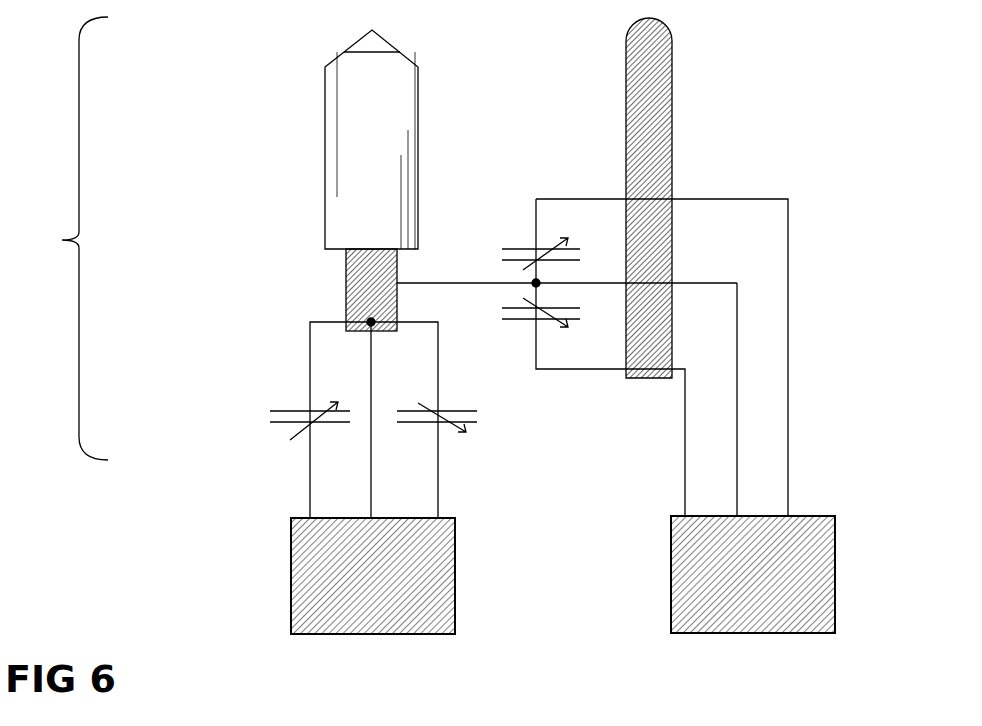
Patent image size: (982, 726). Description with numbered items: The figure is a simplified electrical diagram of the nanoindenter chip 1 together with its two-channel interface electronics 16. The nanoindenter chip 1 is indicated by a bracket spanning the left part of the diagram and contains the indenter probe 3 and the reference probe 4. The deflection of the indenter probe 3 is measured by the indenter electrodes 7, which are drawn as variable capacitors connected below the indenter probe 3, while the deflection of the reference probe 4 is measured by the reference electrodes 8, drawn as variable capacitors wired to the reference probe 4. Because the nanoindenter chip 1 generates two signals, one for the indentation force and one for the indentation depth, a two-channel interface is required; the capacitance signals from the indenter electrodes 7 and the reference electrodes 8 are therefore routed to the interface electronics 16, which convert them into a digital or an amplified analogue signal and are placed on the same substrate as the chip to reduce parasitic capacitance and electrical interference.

The nanoindenter chip 1 is at (64, 238).
The indenter probe 3 is at (387, 267).
The reference probe 4 is at (640, 138).
The indenter electrodes 7 is at (465, 432).
The reference electrodes 8 is at (562, 308).
The interface electronics 16 is at (683, 577).